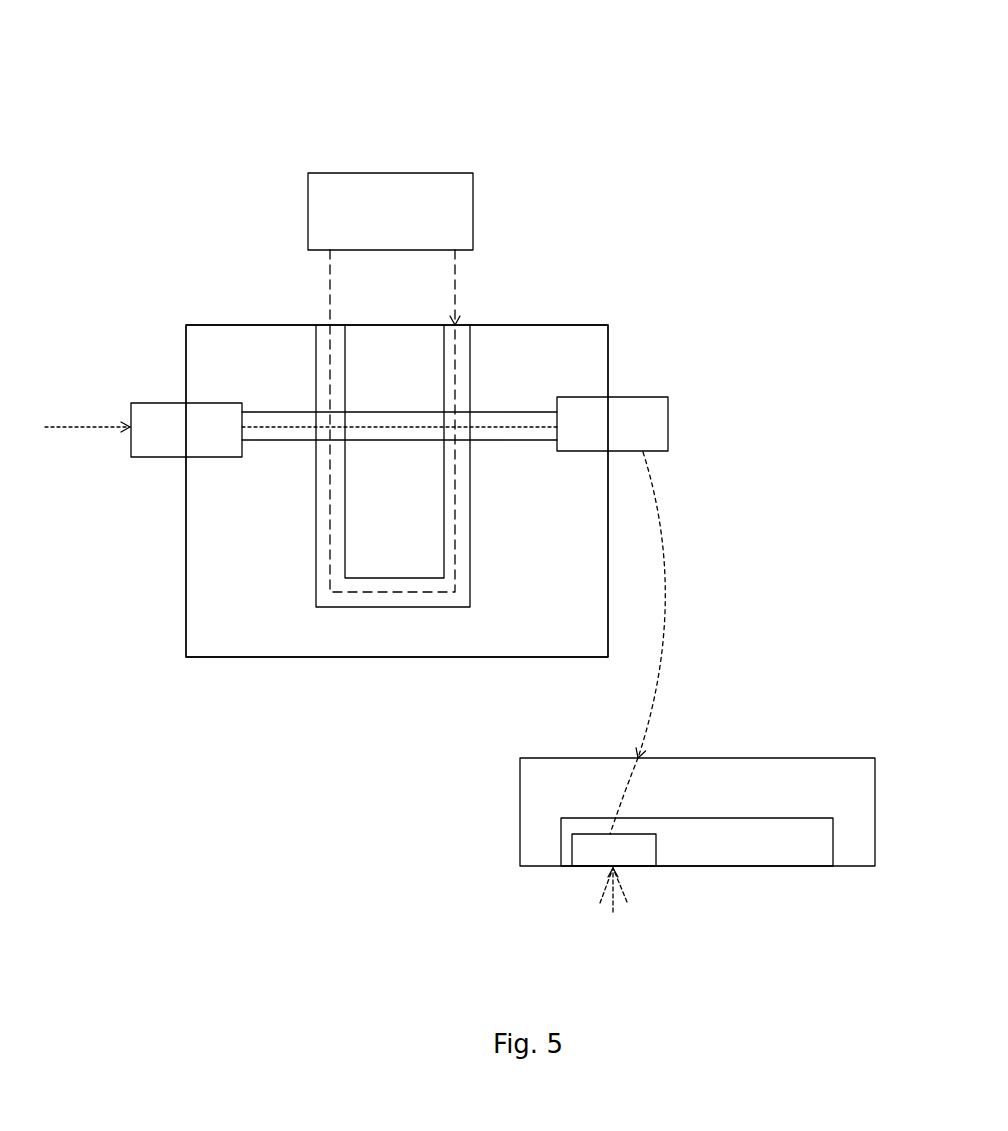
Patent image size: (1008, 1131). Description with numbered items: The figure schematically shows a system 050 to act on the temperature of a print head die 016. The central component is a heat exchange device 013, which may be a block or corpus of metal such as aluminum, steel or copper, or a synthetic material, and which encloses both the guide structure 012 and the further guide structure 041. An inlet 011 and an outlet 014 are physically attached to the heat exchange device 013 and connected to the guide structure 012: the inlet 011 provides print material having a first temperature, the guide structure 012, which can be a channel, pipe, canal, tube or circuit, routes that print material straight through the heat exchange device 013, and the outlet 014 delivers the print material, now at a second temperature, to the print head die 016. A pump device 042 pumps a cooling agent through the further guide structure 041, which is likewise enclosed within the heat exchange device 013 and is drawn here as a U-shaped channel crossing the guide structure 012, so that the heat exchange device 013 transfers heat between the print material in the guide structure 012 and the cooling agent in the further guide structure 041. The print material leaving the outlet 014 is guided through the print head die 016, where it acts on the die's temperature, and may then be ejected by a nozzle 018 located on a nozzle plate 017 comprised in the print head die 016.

The system 050 is at (205, 108).
The heat exchange device 013 is at (218, 324).
The pump device 042 is at (390, 249).
The further guide structure 041 is at (315, 583).
The guide structure 012 is at (508, 408).
The inlet 011 is at (143, 430).
The outlet 014 is at (612, 615).
The print head die 016 is at (697, 812).
The nozzle plate 017 is at (697, 842).
The nozzle 018 is at (614, 873).